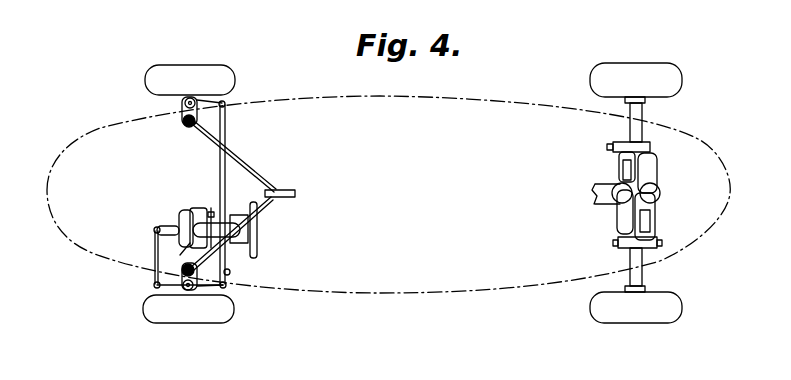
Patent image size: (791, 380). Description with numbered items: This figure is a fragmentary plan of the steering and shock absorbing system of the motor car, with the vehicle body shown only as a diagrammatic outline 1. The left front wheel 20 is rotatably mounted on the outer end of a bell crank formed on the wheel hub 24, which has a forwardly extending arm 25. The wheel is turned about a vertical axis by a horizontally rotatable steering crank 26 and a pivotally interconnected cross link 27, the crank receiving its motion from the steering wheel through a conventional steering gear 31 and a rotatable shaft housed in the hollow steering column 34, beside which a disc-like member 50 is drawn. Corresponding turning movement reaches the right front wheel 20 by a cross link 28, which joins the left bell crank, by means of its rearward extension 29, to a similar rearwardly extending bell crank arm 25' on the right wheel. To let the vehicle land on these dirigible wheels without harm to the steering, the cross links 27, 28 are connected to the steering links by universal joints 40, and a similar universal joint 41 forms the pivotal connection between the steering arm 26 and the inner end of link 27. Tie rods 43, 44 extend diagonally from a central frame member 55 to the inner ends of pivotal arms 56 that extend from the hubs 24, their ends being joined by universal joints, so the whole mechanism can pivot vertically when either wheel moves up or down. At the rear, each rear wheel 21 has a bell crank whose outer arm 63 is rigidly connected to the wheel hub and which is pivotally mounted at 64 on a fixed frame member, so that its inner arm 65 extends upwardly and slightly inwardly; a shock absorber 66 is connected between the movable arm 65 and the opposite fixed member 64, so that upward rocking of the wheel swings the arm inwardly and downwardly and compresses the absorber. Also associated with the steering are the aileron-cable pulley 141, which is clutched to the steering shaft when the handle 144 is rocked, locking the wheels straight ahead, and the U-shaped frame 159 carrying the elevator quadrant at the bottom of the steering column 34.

The vehicle body outline 1 is at (430, 296).
The front wheel 20 is at (180, 72).
The rear wheel 21 is at (625, 70).
The wheel hub 24 is at (183, 102).
The forwardly extending arm 25 is at (181, 320).
The rearwardly extending bell crank arm 25' is at (217, 67).
The steering crank 26 is at (168, 228).
The cross link 27 is at (155, 258).
The cross link 28 is at (219, 163).
The rearward extension 29 is at (208, 290).
The steering gear 31 is at (177, 257).
The steering column 34 is at (228, 224).
The universal joint 40 is at (225, 103).
The universal joint 41 is at (156, 228).
The tie rod 43 is at (270, 201).
The tie rod 44 is at (256, 176).
The pulley 50 is at (258, 233).
The central frame member 55 is at (290, 190).
The pivotal arm 56 is at (183, 120).
The outer arm of bell crank 63 is at (640, 112).
The bell crank pivot 64 is at (611, 147).
The inner arm of bell crank 65 is at (620, 155).
The shock absorber 66 is at (647, 172).
The aileron-cable pulley 141 is at (211, 208).
The handle 144 is at (230, 271).
The U-shaped frame 159 is at (197, 210).